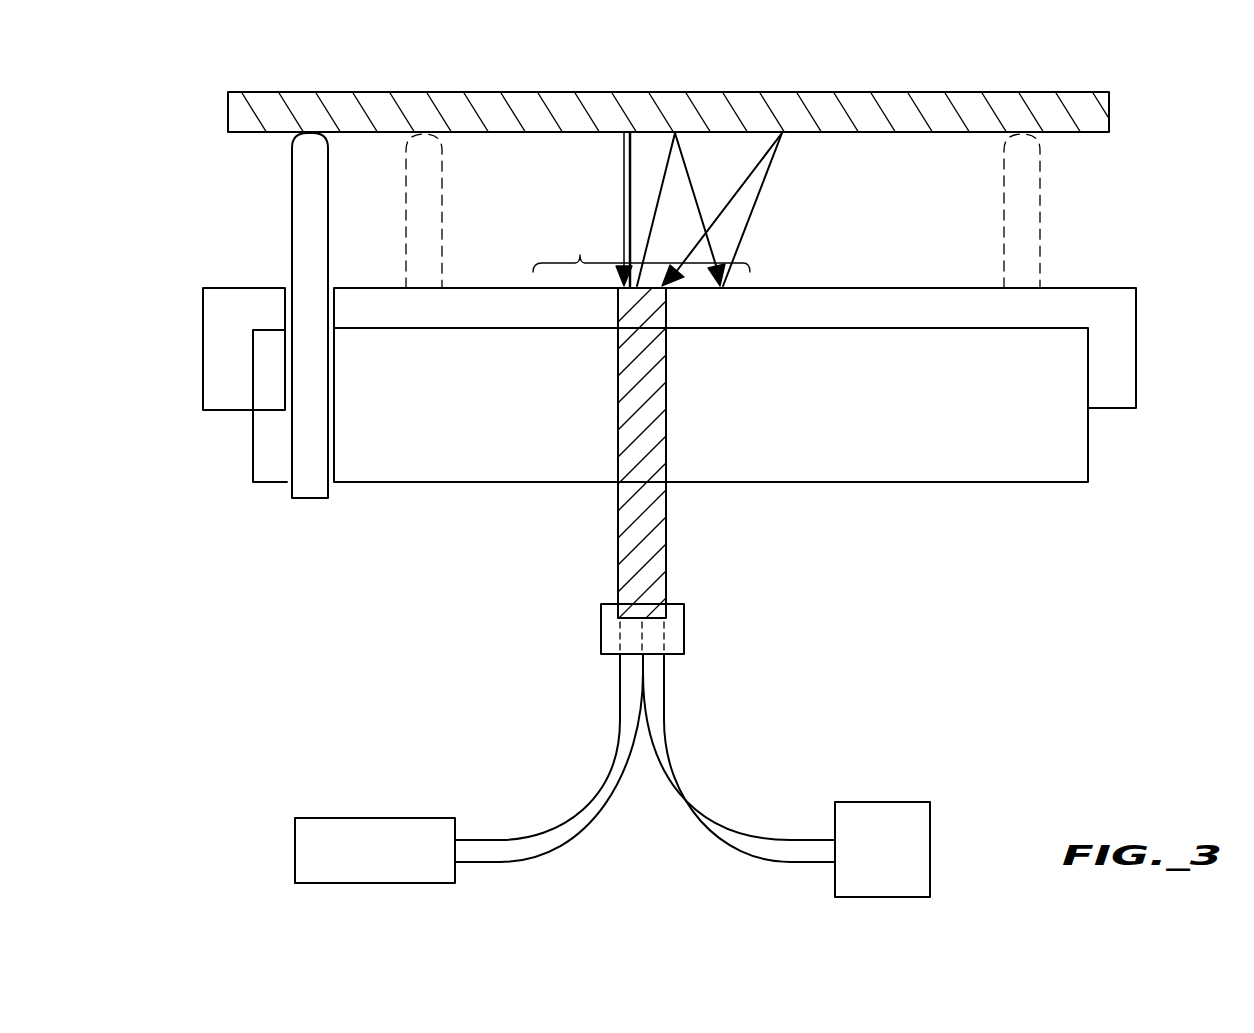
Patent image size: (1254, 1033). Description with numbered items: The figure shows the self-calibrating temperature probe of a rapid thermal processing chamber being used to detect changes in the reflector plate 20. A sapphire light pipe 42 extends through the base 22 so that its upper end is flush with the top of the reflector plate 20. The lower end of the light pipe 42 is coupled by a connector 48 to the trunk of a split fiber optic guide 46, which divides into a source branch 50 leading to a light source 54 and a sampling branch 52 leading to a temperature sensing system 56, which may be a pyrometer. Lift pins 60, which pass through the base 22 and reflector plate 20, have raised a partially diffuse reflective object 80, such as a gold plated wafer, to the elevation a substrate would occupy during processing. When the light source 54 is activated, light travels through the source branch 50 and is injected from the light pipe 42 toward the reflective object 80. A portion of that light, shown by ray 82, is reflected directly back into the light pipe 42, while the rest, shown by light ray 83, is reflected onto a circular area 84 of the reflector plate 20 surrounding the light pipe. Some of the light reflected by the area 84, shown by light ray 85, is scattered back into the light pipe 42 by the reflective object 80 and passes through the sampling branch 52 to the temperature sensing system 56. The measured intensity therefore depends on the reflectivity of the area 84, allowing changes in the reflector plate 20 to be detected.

The reflector plate 20 is at (1120, 325).
The base 22 is at (1070, 457).
The light pipe 42 is at (660, 555).
The split fiber optic guide 46 is at (645, 773).
The connector 48 is at (683, 636).
The source branch 50 is at (597, 803).
The sampling branch 52 is at (718, 827).
The light source 54 is at (350, 828).
The temperature sensing system 56 is at (877, 813).
The lift pins 60 is at (300, 196).
The reflective object 80 is at (988, 90).
The ray 82 is at (622, 200).
The light ray 83 is at (695, 188).
The circular area 84 is at (641, 244).
The light ray 85 is at (753, 213).